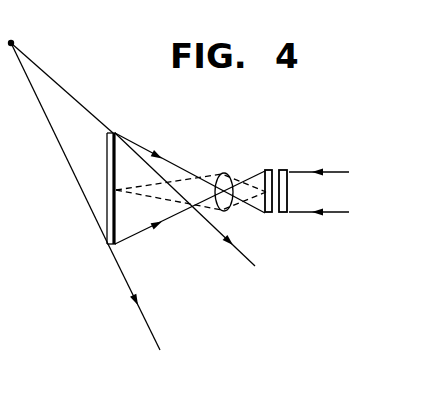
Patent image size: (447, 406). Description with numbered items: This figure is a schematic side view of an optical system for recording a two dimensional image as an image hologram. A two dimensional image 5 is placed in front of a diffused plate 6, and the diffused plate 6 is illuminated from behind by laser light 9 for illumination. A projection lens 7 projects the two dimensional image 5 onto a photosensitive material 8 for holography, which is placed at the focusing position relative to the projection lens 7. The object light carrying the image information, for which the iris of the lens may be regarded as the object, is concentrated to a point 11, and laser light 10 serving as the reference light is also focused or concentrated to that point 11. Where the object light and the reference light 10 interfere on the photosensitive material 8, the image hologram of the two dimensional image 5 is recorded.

The point 11 is at (14, 40).
The photosensitive material for holography 8 is at (106, 145).
The projection lens 7 is at (218, 180).
The two dimensional image 5 is at (267, 170).
The diffused plate 6 is at (284, 170).
The laser light for illumination 9 is at (349, 170).
The laser light for the reference light 10 is at (184, 245).